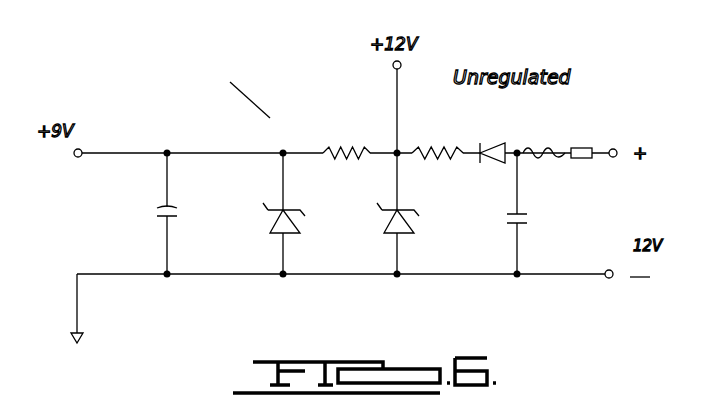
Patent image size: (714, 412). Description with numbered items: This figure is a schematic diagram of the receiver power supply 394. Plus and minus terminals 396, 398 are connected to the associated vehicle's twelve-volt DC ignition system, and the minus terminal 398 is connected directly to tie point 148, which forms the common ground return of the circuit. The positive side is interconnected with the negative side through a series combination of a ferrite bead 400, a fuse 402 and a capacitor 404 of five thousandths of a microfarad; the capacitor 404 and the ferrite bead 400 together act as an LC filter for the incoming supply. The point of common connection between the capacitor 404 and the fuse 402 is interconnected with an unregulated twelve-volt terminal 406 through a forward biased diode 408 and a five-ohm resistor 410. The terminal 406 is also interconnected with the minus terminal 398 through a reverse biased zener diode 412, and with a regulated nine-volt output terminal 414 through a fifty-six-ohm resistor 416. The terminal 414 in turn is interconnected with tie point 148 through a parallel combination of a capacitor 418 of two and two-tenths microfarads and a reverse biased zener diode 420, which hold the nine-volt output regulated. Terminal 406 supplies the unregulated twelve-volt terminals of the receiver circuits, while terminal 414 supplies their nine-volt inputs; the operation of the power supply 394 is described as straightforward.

The power supply 394 is at (272, 120).
The plus terminal 396 is at (613, 157).
The minus terminal 398 is at (609, 278).
The ferrite bead 400 is at (586, 146).
The fuse 402 is at (540, 148).
The capacitor 404 is at (527, 218).
The +12 VDC (unregulated) terminal 406 is at (393, 67).
The forward biased diode 408 is at (500, 145).
The resistor 410 is at (437, 162).
The zener diode 412 is at (415, 228).
The +9 VDC regulated output terminal 414 is at (75, 157).
The resistor 416 is at (345, 148).
The capacitor 418 is at (150, 216).
The zener diode 420 is at (277, 218).
The tie point 148 is at (85, 338).